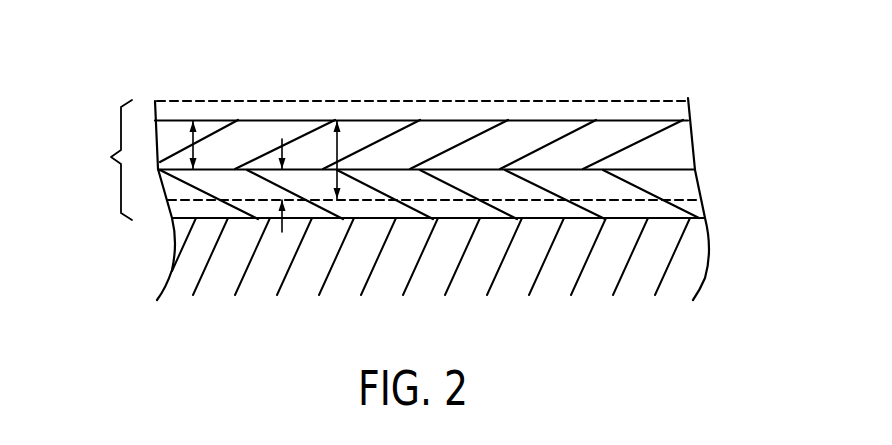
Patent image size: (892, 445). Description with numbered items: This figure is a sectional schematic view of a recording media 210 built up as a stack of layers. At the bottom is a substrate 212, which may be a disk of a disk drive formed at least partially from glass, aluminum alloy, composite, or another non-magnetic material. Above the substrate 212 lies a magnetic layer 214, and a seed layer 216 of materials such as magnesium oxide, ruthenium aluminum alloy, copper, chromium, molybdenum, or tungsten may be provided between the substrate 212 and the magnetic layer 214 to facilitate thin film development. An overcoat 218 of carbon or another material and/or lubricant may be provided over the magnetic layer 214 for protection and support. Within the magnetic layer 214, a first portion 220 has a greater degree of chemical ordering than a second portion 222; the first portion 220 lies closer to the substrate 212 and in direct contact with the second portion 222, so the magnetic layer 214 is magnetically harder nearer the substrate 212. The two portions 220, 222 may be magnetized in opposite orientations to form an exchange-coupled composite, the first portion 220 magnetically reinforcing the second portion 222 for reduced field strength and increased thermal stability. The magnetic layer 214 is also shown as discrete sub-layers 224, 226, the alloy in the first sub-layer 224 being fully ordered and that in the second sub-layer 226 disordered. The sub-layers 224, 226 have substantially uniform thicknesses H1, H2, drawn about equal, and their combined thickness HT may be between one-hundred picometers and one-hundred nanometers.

The recording media 210 is at (723, 107).
The substrate 212 is at (193, 278).
The magnetic layer 214 is at (380, 160).
The seed layer 216 is at (165, 213).
The overcoat 218 is at (177, 110).
The first portion 220 is at (587, 194).
The second portion 222 is at (615, 128).
The first sub-layer 224 is at (492, 185).
The second sub-layer 226 is at (425, 140).
The thickness of first sub-layer H1 is at (282, 139).
The thickness of second sub-layer H2 is at (212, 140).
The combined thickness HT is at (338, 143).